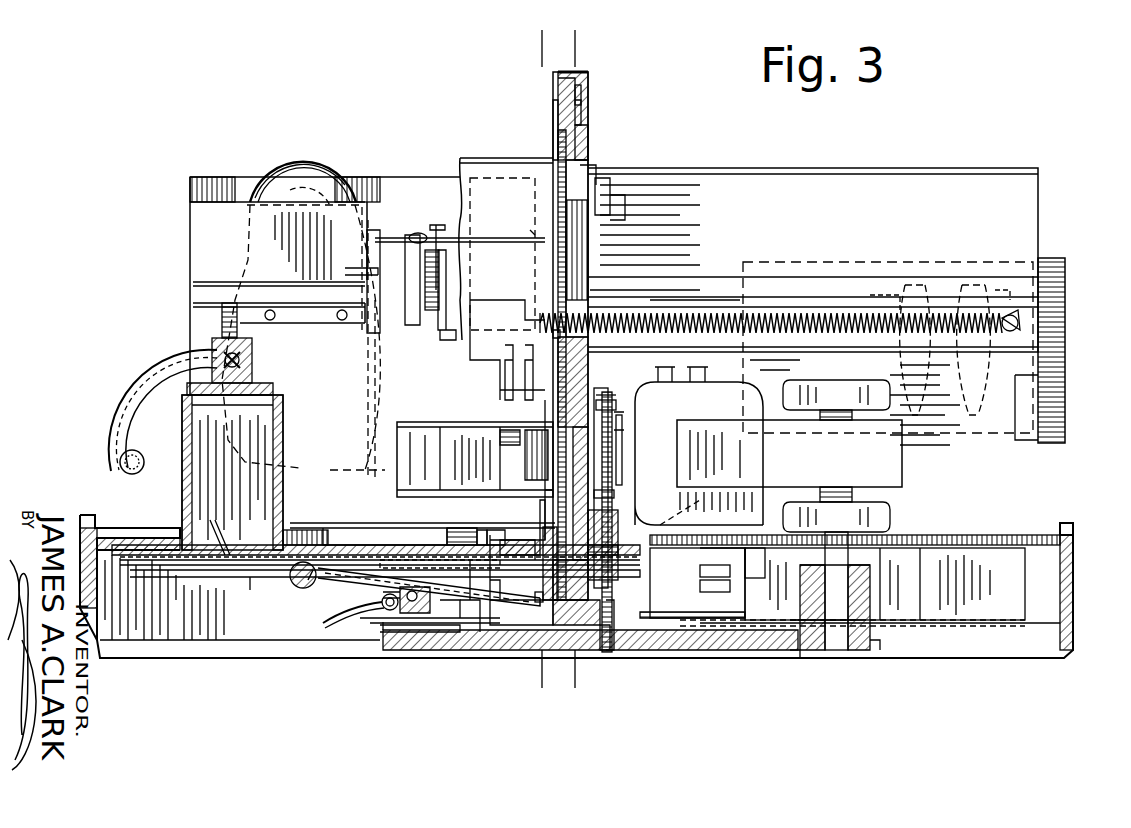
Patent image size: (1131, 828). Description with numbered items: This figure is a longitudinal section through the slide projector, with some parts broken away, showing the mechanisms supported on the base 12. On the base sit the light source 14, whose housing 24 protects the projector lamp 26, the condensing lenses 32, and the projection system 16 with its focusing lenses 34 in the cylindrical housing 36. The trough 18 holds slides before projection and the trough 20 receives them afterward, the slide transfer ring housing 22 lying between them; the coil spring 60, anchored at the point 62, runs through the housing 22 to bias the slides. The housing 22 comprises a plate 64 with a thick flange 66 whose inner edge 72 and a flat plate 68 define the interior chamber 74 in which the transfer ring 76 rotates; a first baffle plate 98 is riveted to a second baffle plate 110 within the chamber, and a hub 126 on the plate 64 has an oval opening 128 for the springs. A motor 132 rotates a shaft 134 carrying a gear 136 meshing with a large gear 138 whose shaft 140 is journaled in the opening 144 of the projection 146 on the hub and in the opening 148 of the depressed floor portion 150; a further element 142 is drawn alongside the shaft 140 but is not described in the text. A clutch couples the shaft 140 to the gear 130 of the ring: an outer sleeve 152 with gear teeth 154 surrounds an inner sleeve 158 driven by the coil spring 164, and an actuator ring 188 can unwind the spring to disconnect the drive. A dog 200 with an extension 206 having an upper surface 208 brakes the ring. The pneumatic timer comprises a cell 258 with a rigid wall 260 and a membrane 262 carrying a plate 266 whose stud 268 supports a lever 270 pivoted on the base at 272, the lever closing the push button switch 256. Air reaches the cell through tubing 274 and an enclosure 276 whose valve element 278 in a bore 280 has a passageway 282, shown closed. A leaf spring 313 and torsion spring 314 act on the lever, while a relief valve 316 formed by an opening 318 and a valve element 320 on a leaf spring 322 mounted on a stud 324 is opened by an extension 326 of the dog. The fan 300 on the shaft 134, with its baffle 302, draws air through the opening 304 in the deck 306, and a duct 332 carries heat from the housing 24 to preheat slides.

The base 12 is at (143, 648).
The light source 14 is at (304, 158).
The projection system 16 is at (1050, 256).
The trough 18 is at (866, 182).
The trough 20 is at (478, 160).
The slide transfer ring housing 22 is at (590, 178).
The housing or shield 24 is at (192, 216).
The projector lamp 26 is at (300, 172).
The condensing lenses 32 is at (470, 235).
The focusing lenses 34 is at (965, 282).
The cylindrical housing 36 is at (835, 262).
The coil spring 60 is at (706, 312).
The anchor point 62 is at (1018, 322).
The plate 64 is at (582, 148).
The flange 66 is at (588, 75).
The flat plate 68 is at (556, 110).
The inner edge 72 is at (556, 90).
The interior chamber 74 is at (582, 132).
The slide carrier or transfer ring 76 is at (582, 114).
The first baffle plate 98 is at (572, 245).
The second baffle plate 110 is at (560, 138).
The hub 126 is at (545, 380).
The oval shaped opening 128 is at (588, 340).
The gear 130 is at (582, 94).
The motor 132 is at (895, 458).
The shaft 134 is at (840, 640).
The gear 136 is at (870, 638).
The gear 138 is at (745, 652).
The shaft 140 is at (610, 645).
The rod 142 is at (612, 400).
The opening 144 is at (618, 405).
The horizontally extending projection 146 is at (603, 390).
The opening 148 is at (606, 640).
The depressed floor portion 150 is at (553, 615).
The sleeve 152 is at (712, 575).
The gear teeth 154 is at (690, 606).
The second sleeve 158 is at (712, 592).
The coil spring 164 is at (622, 530).
The actuator ring 188 is at (616, 492).
The latch member or dog 200 is at (542, 574).
The extension 206 is at (536, 593).
The upper surface 208 is at (625, 458).
The push button switch 256 is at (385, 640).
The pneumatic cell 258 is at (294, 611).
The rigid wall 260 is at (325, 556).
The flexible membrane 262 is at (210, 550).
The rigid plate 266 is at (248, 588).
The stud 268 is at (292, 582).
The lever 270 is at (330, 618).
The pivot 272 is at (420, 556).
The flexible tubing 274 is at (125, 386).
The air-tight enclosure 276 is at (182, 442).
The valve element 278 is at (252, 348).
The bore 280 is at (214, 350).
The passageway 282 is at (252, 364).
The fan 300 is at (900, 548).
The baffle 302 is at (740, 565).
The opening 304 is at (712, 548).
The deck 306 is at (1000, 538).
The leaf spring 313 is at (482, 645).
The torsion spring 314 is at (425, 640).
The relief valve 316 is at (478, 535).
The opening 318 is at (495, 532).
The valve element 320 is at (445, 538).
The leaf spring 322 is at (362, 522).
The stud 324 is at (285, 540).
The extension 326 is at (545, 500).
The duct 332 is at (397, 470).